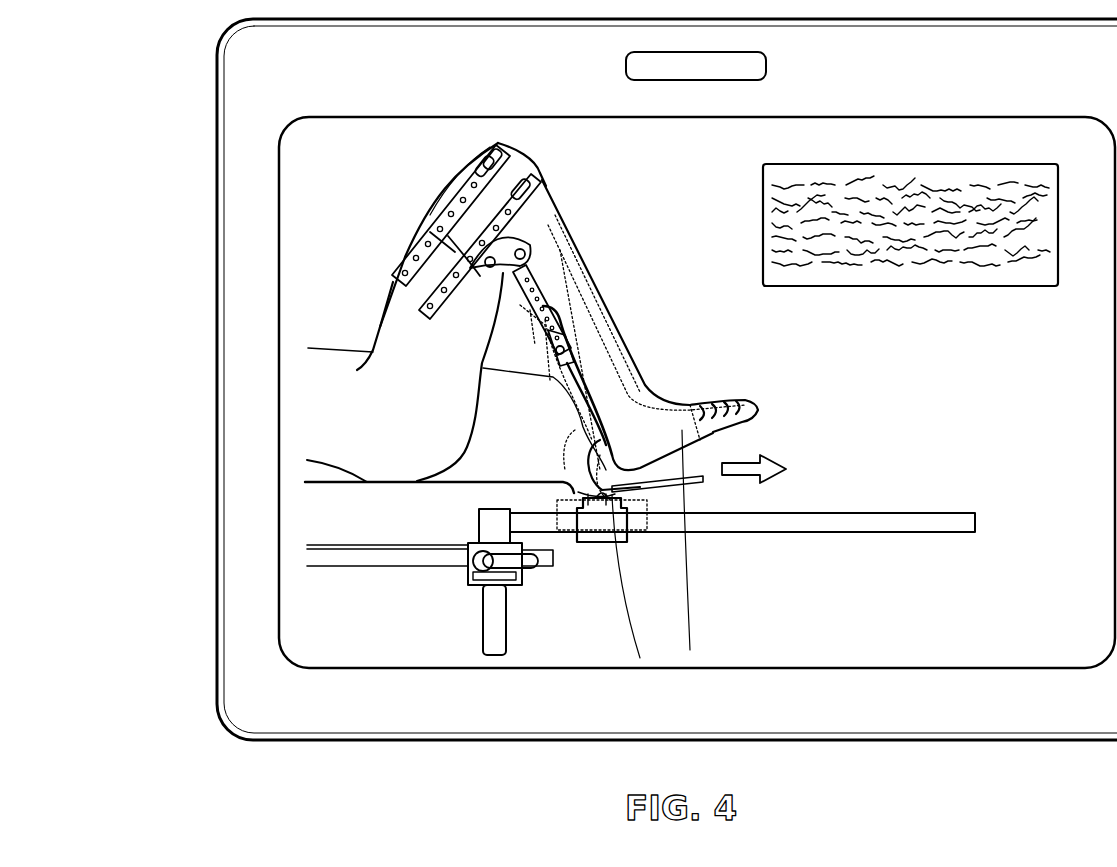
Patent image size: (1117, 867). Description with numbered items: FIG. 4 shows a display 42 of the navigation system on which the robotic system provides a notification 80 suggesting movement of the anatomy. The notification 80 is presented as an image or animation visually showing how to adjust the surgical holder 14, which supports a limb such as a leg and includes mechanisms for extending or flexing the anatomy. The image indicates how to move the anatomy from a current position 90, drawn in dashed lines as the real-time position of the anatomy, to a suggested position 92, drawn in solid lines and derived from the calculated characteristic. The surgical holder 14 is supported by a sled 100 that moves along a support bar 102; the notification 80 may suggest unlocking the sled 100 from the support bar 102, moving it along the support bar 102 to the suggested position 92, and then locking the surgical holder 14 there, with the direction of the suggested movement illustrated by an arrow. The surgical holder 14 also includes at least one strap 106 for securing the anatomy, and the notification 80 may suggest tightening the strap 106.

The display 42 is at (318, 260).
The strap 106 is at (460, 190).
The current position 90 is at (580, 270).
The suggested position 92 is at (597, 303).
The surgical holder 14 is at (605, 382).
The notification 80 is at (716, 373).
The support bar 102 is at (866, 518).
The sled 100 is at (597, 527).